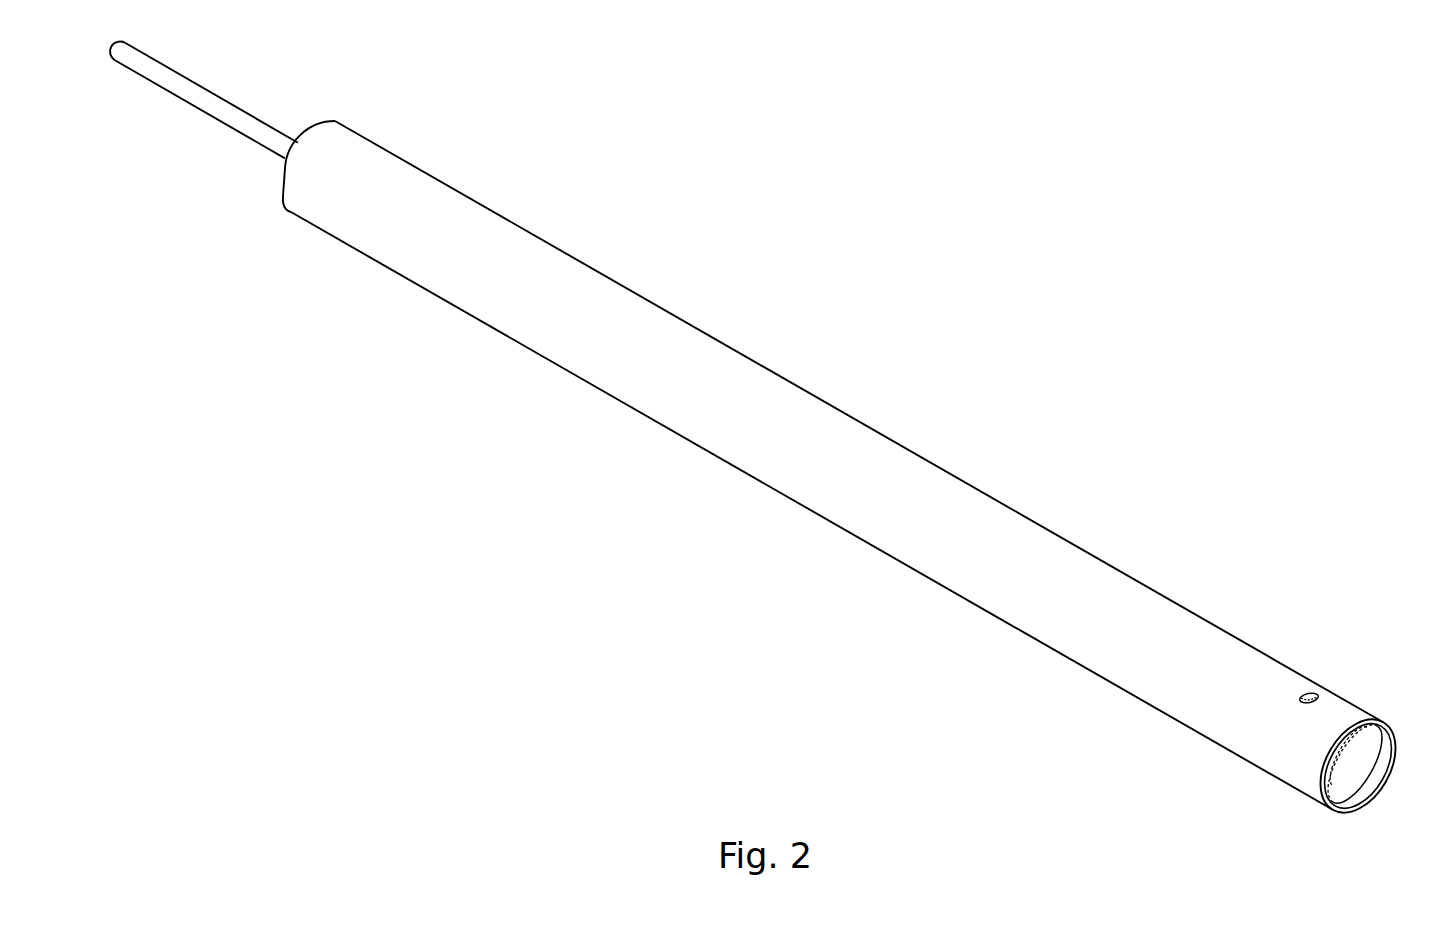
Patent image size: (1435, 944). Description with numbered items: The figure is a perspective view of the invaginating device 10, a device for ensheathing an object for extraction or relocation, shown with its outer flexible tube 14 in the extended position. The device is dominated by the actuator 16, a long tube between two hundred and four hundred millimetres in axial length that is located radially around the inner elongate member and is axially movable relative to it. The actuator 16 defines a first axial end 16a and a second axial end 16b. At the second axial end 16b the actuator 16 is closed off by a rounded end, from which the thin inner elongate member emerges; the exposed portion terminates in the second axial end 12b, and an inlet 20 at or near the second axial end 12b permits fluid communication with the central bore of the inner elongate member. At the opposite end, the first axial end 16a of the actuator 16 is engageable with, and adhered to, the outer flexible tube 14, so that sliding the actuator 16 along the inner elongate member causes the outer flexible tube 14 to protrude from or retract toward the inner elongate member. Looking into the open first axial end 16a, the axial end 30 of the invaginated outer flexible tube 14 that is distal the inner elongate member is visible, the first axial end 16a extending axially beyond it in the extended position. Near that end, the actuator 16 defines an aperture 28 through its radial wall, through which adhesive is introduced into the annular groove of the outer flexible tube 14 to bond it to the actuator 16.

The invaginating device 10 is at (1080, 443).
The second axial end 12b is at (115, 60).
The outer flexible tube 14 is at (1390, 730).
The actuator 16 is at (875, 458).
The first axial end 16a is at (1380, 718).
The second axial end 16b is at (325, 119).
The inlet 20 is at (118, 48).
The aperture 28 is at (1311, 693).
The axial end 30 is at (1352, 768).